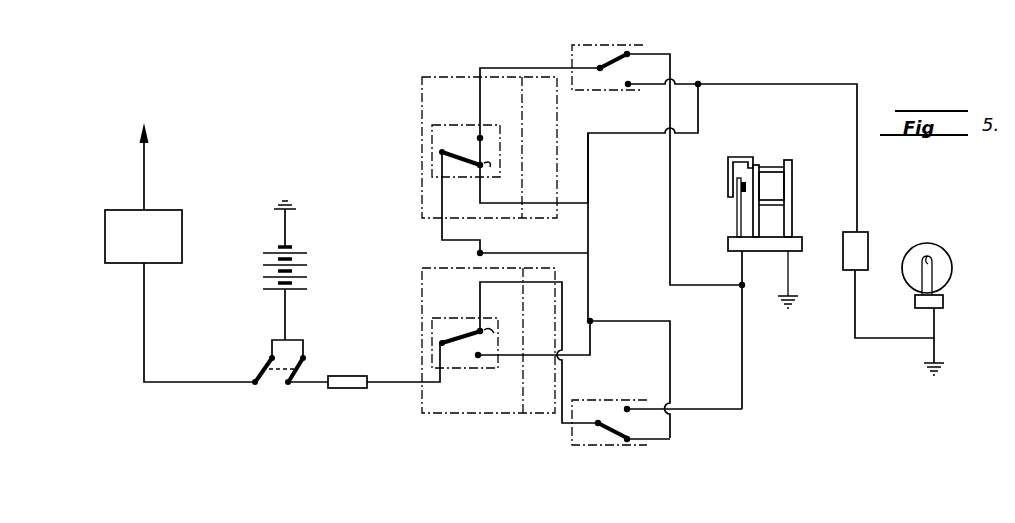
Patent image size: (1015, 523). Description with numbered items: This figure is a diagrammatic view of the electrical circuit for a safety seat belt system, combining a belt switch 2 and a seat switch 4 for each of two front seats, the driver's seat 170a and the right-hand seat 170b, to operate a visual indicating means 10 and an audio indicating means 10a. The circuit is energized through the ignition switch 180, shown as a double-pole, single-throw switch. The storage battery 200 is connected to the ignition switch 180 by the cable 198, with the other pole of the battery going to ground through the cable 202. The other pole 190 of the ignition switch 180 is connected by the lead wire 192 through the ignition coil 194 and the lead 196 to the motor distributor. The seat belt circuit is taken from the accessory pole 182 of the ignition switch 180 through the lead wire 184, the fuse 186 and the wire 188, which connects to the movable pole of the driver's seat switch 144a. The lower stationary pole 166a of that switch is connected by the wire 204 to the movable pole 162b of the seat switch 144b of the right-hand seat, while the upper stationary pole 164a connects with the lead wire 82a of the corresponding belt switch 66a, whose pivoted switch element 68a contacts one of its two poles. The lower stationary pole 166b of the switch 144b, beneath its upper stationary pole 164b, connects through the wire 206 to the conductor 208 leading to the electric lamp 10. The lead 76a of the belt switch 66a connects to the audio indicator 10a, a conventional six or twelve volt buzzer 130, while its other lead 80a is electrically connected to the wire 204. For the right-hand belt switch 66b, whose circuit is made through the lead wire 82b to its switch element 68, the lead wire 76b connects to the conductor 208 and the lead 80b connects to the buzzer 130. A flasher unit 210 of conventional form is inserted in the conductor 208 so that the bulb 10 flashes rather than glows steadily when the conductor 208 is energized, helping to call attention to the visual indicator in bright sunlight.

The lead 196 is at (144, 172).
The ignition coil 194 is at (182, 243).
The lead wire 192 is at (172, 380).
The cable 202 is at (288, 232).
The storage battery 200 is at (303, 263).
The cable 198 is at (287, 318).
The pole 190 is at (270, 357).
The ignition switch 180 is at (304, 354).
The accessory pole 182 is at (305, 359).
The lead wire 184 is at (309, 384).
The fuse 186 is at (350, 387).
The wire 188 is at (390, 381).
The driver's seat 170a is at (422, 282).
The right-hand seat 170b is at (437, 82).
The movable pole 162b is at (440, 151).
The seat switch 4 is at (466, 122).
The seat switch 144a is at (484, 321).
The seat switch 144b is at (484, 131).
The upper stationary pole 164a is at (510, 333).
The upper stationary pole 164b is at (490, 137).
The lower stationary pole 166a is at (480, 359).
The lower stationary pole 166b is at (500, 154).
The wire 204 is at (514, 209).
The wire 206 is at (582, 205).
The conductor 208 is at (746, 84).
The lead wire 82a is at (565, 425).
The lead wire 82b is at (537, 65).
The switch element 68 is at (613, 70).
The switch element 68a is at (613, 424).
The belt switch 66a is at (617, 401).
The belt switch 66b is at (630, 46).
The belt switch 2 is at (614, 47).
The lead 76a is at (697, 405).
The lead wire 76b is at (674, 50).
The lead 80a is at (672, 346).
The lead 80b is at (661, 84).
The buzzer 130 is at (768, 176).
The audio indicating means 10a is at (793, 188).
The flasher unit 210 is at (868, 246).
The electric lamp 10 is at (951, 268).